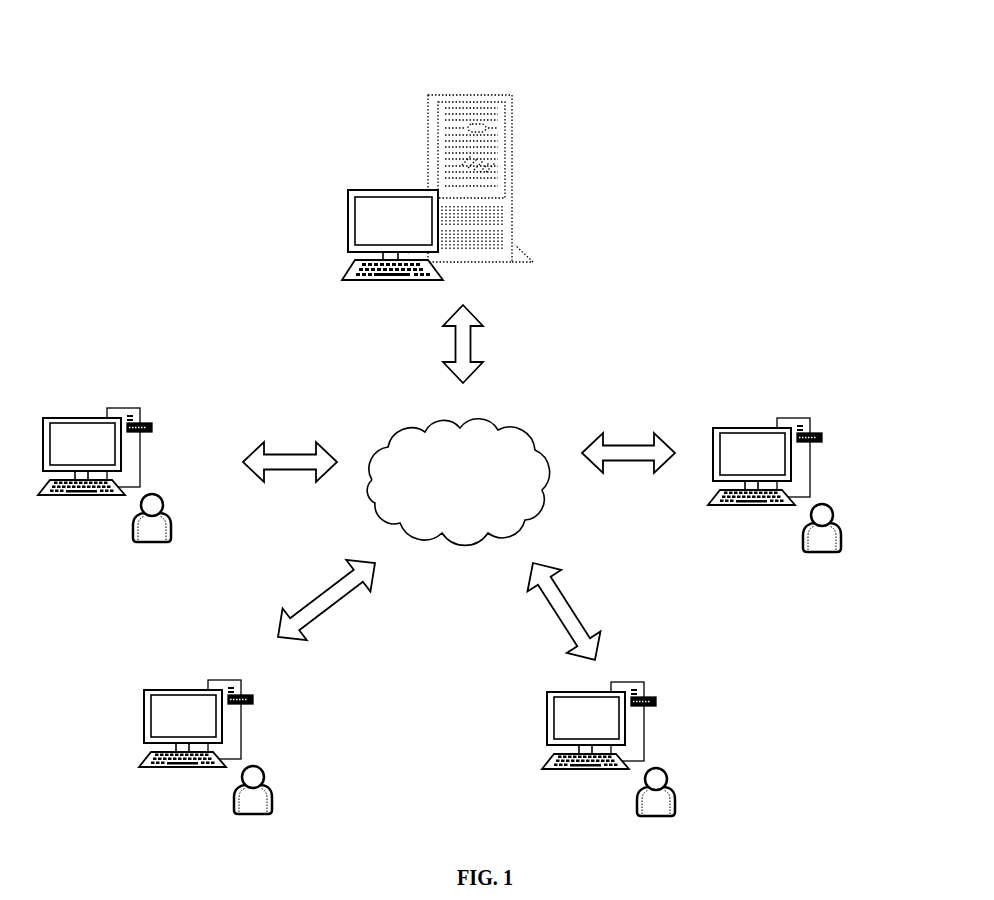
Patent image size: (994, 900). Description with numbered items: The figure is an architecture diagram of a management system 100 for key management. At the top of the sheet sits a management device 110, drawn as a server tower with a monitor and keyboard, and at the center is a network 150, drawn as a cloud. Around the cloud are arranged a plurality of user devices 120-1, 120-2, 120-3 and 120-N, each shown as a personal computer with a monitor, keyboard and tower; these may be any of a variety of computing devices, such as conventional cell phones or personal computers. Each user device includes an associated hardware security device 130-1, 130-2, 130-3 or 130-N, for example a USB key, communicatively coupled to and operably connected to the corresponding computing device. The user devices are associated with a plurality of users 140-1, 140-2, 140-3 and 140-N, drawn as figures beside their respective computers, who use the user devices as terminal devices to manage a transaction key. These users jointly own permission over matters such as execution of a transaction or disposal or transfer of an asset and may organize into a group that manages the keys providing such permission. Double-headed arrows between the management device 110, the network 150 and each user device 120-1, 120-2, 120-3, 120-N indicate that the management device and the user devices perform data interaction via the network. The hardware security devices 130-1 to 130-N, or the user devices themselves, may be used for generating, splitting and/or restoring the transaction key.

The management system 100 is at (516, 59).
The management device 110 is at (508, 152).
The user device 120-1 is at (799, 461).
The user device 120-2 is at (633, 725).
The user device 120-3 is at (230, 723).
The user device 120-N is at (129, 451).
The hardware security device 130-1 is at (843, 429).
The hardware security device 130-2 is at (678, 692).
The hardware security device 130-3 is at (275, 690).
The hardware security device 130-N is at (174, 419).
The user 140-1 is at (857, 521).
The user 140-2 is at (694, 780).
The user 140-3 is at (288, 784).
The user 140-N is at (188, 513).
The network 150 is at (518, 418).